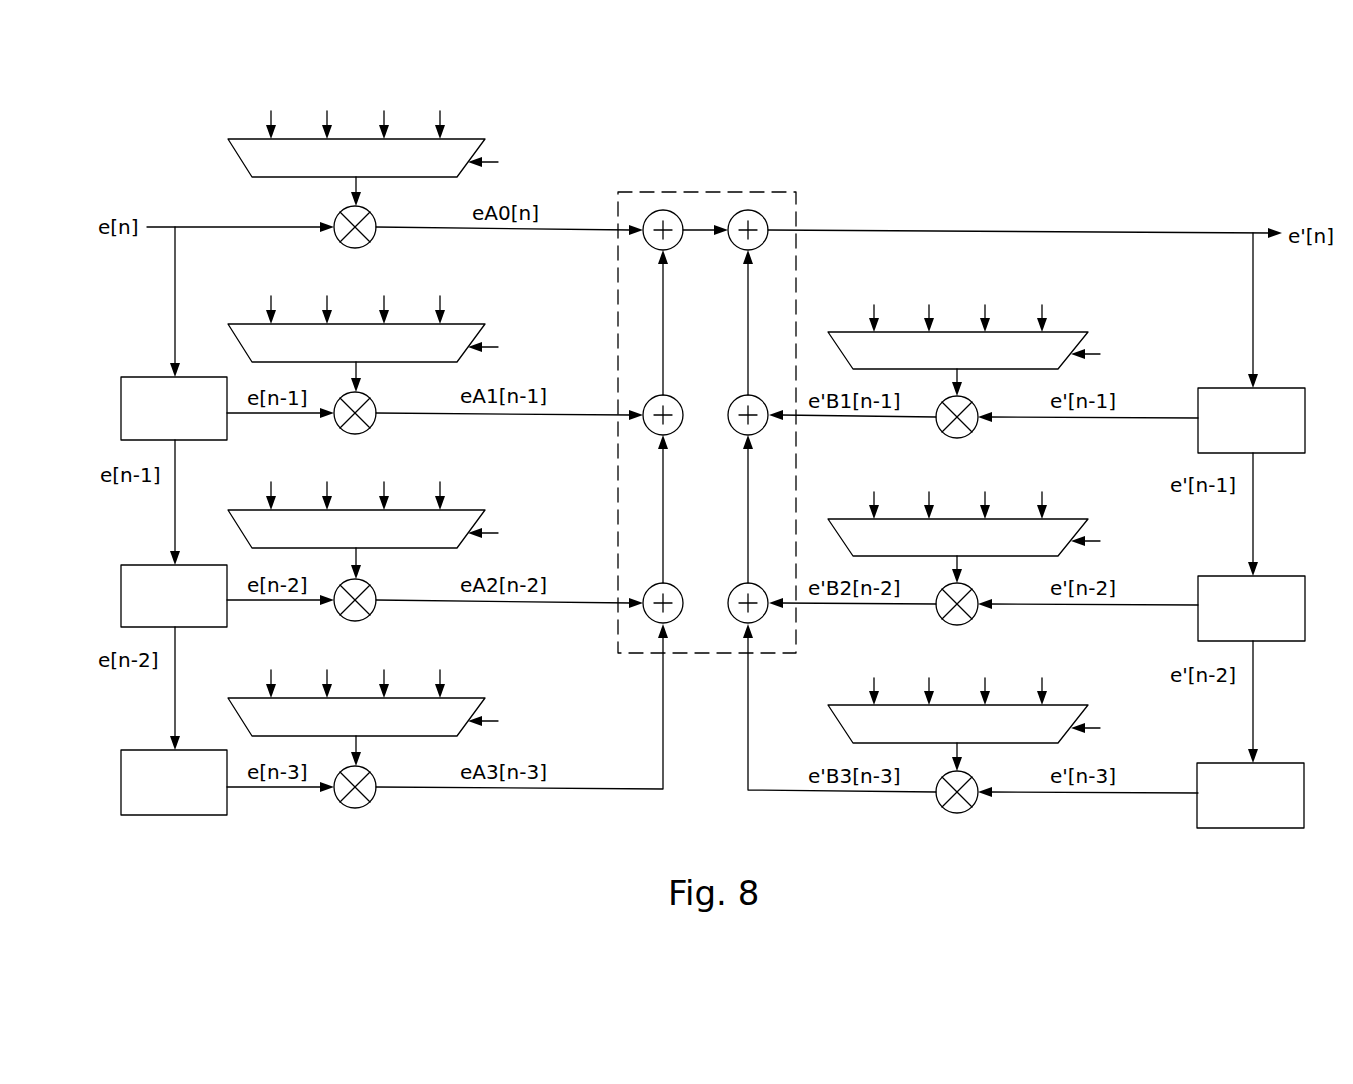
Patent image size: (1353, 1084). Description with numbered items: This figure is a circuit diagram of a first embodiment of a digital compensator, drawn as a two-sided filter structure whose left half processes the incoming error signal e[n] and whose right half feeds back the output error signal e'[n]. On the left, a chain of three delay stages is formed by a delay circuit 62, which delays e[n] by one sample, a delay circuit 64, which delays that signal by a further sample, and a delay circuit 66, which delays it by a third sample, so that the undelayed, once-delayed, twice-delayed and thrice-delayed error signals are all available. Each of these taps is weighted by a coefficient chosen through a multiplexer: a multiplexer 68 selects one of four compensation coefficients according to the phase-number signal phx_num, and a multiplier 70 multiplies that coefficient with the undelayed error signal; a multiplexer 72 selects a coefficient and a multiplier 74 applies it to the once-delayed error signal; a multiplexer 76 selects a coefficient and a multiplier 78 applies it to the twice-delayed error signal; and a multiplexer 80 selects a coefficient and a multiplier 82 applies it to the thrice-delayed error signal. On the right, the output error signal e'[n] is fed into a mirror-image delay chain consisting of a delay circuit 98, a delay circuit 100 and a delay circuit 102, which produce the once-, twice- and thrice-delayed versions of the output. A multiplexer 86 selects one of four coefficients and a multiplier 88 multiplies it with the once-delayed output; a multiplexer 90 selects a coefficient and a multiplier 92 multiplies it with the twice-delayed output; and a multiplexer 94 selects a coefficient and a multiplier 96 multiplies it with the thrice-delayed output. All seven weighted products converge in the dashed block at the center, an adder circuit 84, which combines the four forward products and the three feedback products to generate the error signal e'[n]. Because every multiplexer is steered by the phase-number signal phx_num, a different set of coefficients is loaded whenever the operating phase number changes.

The delay circuit 62 is at (150, 377).
The delay circuit 64 is at (150, 565).
The delay circuit 66 is at (150, 750).
The multiplexer 68 is at (228, 150).
The multiplier 70 is at (371, 238).
The multiplexer 72 is at (244, 324).
The multiplier 74 is at (371, 424).
The multiplexer 76 is at (244, 510).
The multiplier 78 is at (371, 611).
The multiplexer 80 is at (244, 698).
The multiplier 82 is at (371, 798).
The adder circuit 84 is at (705, 192).
The multiplexer 86 is at (1070, 332).
The multiplier 88 is at (973, 428).
The multiplexer 90 is at (1070, 519).
The multiplier 92 is at (973, 615).
The multiplexer 94 is at (1070, 705).
The multiplier 96 is at (973, 803).
The delay circuit 98 is at (1290, 388).
The delay circuit 100 is at (1290, 576).
The delay circuit 102 is at (1290, 763).